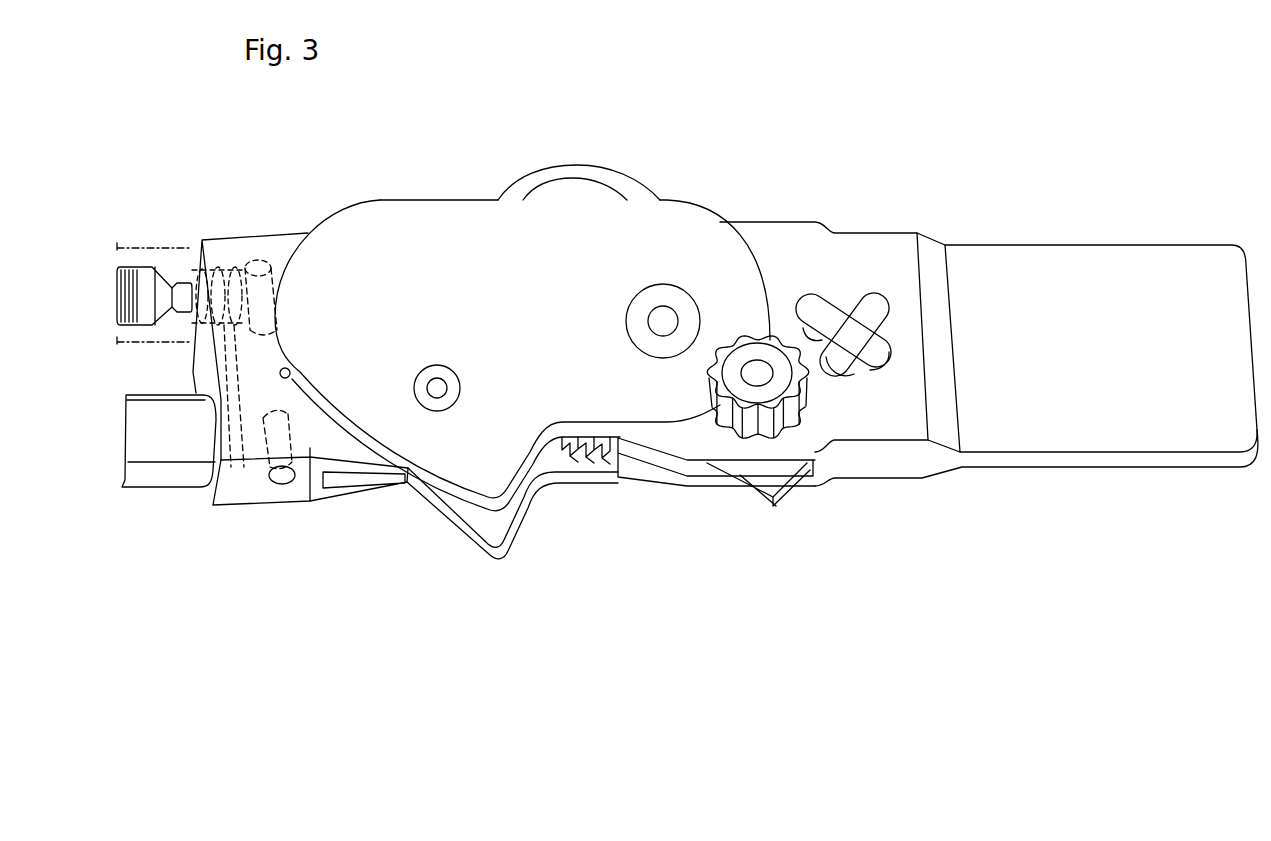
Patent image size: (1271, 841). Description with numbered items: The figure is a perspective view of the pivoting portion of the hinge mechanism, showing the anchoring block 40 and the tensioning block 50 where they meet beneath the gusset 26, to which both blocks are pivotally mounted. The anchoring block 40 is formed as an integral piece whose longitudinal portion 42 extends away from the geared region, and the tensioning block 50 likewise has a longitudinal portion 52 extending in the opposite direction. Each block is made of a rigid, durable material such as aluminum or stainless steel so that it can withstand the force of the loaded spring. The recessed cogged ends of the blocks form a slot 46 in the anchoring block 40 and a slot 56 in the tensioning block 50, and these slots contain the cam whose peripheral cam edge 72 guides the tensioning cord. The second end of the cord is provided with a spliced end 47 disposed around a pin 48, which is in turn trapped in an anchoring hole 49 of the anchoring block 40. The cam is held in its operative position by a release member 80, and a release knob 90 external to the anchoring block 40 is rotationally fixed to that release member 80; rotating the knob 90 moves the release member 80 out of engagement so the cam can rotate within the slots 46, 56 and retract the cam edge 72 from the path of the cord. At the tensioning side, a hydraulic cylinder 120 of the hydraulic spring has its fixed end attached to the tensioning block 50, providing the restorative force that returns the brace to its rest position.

The gusset 26 is at (449, 215).
The peripheral cam edge 72 is at (602, 169).
The anchoring block 40 is at (1090, 284).
The longitudinal portion 42 is at (1021, 285).
The slot 46 is at (690, 472).
The spliced end 47 is at (827, 318).
The pin 48 is at (880, 323).
The anchoring hole 49 is at (883, 360).
The tensioning block 50 is at (265, 222).
The longitudinal portion 52 is at (308, 505).
The slot 56 is at (352, 472).
The release member 80 is at (793, 488).
The release knob 90 is at (778, 382).
The hydraulic cylinder 120 is at (142, 408).